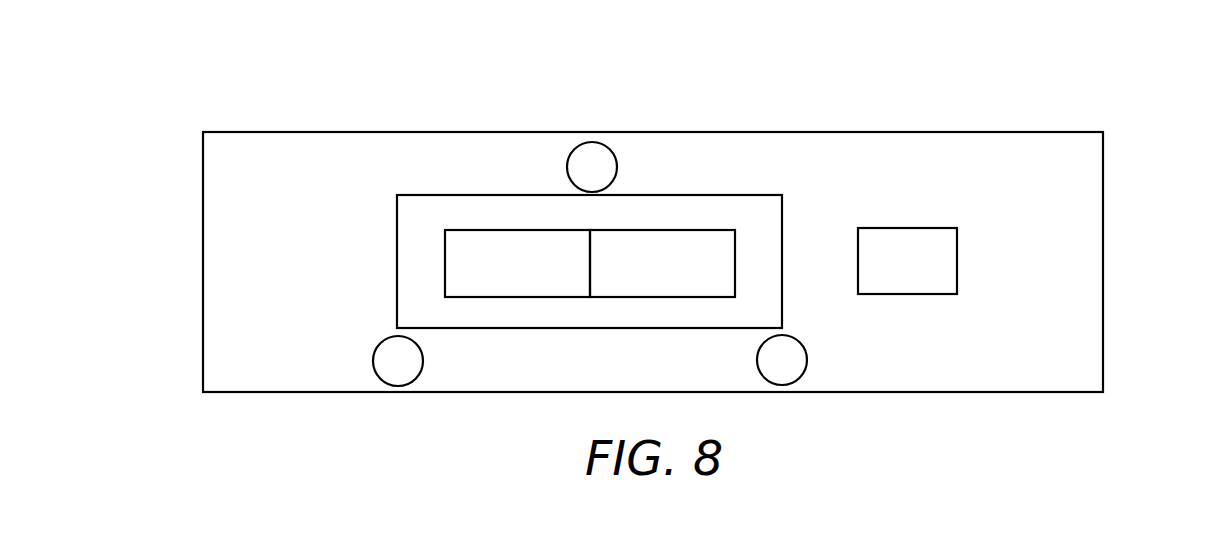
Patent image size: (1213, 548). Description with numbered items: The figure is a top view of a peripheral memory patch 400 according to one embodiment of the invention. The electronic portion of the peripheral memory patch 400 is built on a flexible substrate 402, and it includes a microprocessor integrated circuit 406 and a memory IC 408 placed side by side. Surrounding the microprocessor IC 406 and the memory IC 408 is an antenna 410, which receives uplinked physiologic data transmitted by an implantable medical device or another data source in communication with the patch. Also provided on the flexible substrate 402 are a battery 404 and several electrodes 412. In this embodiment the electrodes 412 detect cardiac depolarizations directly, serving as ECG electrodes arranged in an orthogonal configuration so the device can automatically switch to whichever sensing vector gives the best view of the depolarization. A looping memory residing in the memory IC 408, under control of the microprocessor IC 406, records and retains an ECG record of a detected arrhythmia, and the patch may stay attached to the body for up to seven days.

The peripheral memory patch 400 is at (1128, 139).
The flexible substrate 402 is at (808, 132).
The battery 404 is at (958, 270).
The microprocessor integrated circuit 406 is at (512, 308).
The memory IC 408 is at (675, 312).
The antenna 410 is at (618, 328).
The electrodes 412 is at (567, 171).